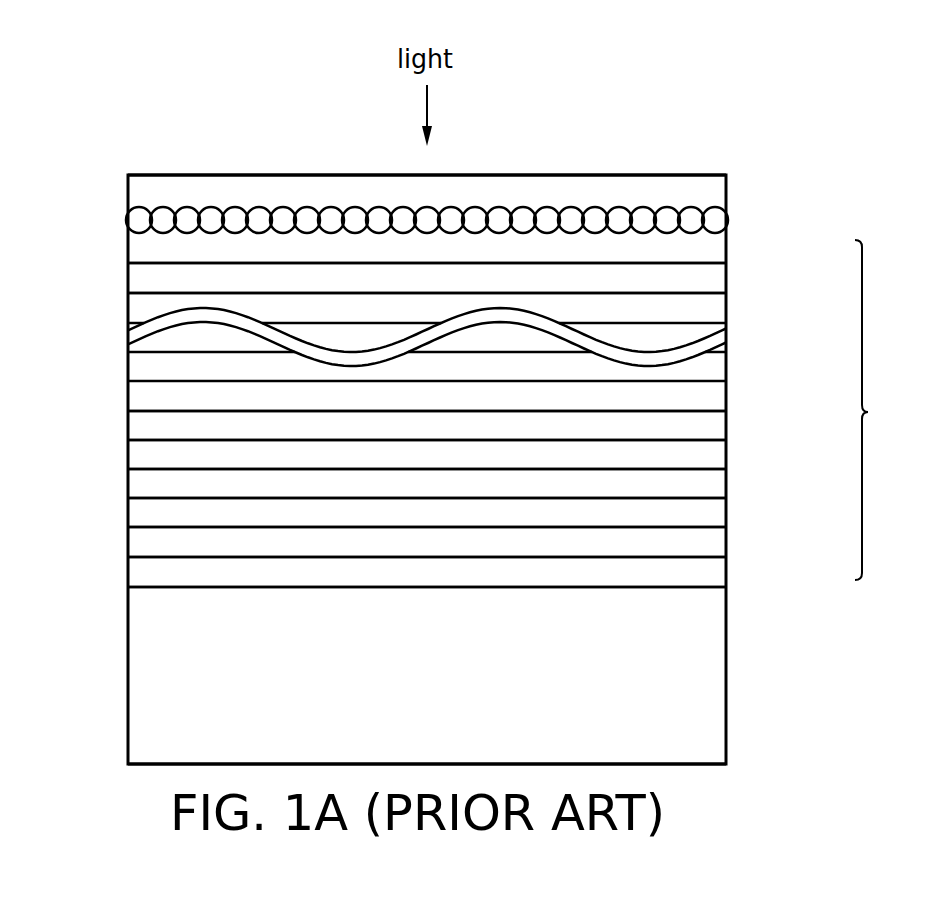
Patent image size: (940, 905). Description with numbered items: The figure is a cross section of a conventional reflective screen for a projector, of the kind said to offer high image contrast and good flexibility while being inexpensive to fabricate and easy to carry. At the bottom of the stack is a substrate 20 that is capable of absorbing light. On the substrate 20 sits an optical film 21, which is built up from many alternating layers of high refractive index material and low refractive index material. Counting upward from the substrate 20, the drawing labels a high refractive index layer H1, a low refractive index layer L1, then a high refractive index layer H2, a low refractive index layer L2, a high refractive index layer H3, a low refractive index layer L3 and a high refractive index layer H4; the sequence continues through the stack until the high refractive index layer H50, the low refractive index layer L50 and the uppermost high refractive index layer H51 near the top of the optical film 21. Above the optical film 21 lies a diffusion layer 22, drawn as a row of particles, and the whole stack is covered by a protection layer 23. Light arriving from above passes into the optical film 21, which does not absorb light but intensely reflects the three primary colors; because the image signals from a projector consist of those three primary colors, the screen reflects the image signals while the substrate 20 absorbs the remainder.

The substrate 20 is at (715, 673).
The optical film 21 is at (882, 410).
The diffusion layer 22 is at (715, 219).
The protection layer 23 is at (715, 189).
The high refractive index material layer H1 is at (715, 571).
The low refractive index material layer L1 is at (715, 542).
The high refractive index material layer H2 is at (715, 513).
The low refractive index material layer L2 is at (715, 483).
The high refractive index material layer H3 is at (715, 455).
The low refractive index material layer L3 is at (715, 425).
The high refractive index material layer H4 is at (715, 397).
The high refractive index material layer H50 is at (715, 307).
The low refractive index material layer L50 is at (715, 277).
The high refractive index material layer H51 is at (715, 248).